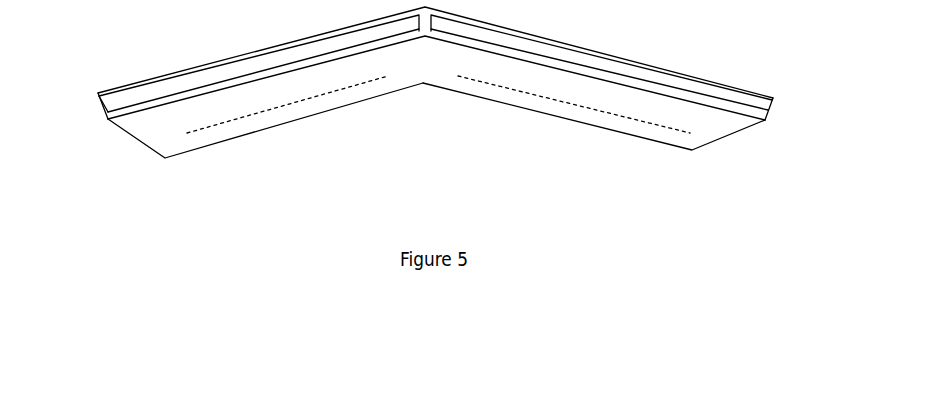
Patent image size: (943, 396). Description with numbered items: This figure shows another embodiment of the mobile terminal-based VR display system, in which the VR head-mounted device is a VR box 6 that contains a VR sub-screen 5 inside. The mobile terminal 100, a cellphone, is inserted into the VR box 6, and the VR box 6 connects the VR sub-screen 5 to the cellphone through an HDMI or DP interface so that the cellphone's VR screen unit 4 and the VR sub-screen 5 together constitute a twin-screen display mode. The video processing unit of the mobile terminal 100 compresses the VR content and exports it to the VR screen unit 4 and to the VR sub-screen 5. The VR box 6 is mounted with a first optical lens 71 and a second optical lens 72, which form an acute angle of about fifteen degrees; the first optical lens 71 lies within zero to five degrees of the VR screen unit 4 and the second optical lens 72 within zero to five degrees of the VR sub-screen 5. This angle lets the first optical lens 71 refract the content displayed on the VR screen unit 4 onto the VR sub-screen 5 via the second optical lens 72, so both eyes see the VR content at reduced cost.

The mobile terminal 100 is at (409, 63).
The VR screen unit 4 is at (234, 134).
The VR sub-screen 5 is at (641, 134).
The VR box 6 is at (455, 67).
The first optical lens 71 is at (289, 131).
The second optical lens 72 is at (567, 128).